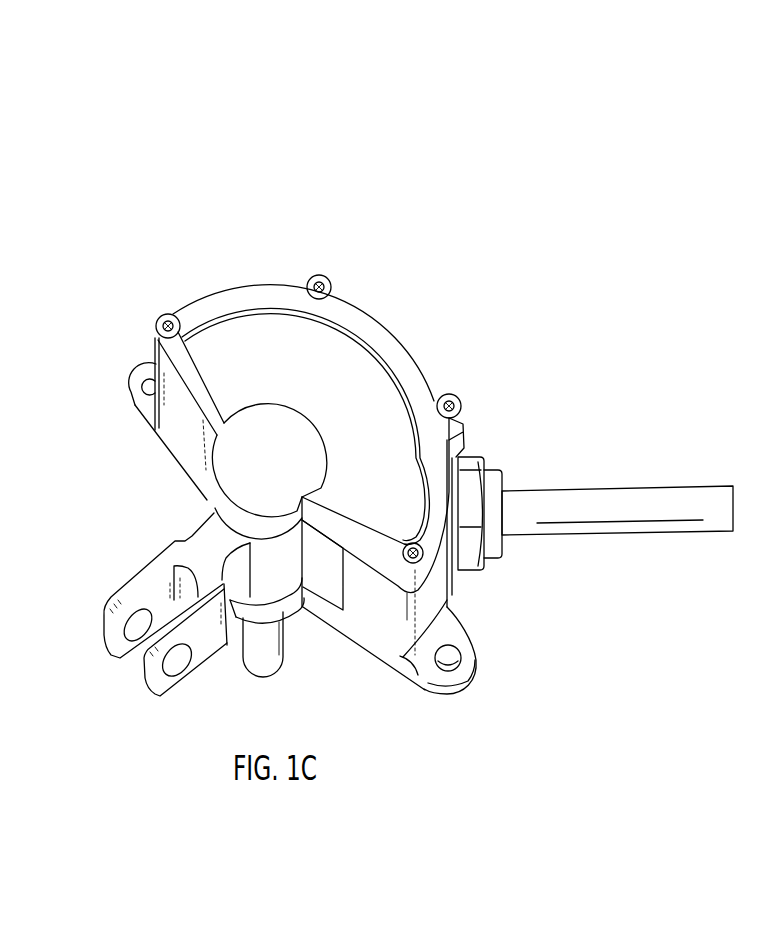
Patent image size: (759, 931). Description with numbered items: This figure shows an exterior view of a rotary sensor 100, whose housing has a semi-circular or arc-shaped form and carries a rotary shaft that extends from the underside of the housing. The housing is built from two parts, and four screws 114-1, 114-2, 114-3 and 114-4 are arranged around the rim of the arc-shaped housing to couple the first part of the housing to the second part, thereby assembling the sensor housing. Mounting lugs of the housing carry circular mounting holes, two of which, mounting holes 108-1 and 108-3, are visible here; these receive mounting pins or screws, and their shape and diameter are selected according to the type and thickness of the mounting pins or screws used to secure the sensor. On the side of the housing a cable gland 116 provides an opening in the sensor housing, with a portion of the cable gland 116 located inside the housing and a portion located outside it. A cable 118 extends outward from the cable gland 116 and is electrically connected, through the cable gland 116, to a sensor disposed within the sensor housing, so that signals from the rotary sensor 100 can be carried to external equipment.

The rotary sensor 100 is at (411, 413).
The mounting hole 108-1 is at (476, 683).
The mounting hole 108-3 is at (140, 366).
The screw 114-1 is at (174, 294).
The screw 114-2 is at (338, 265).
The screw 114-3 is at (459, 387).
The screw 114-4 is at (421, 593).
The cable gland 116 is at (488, 466).
The cable 118 is at (604, 492).